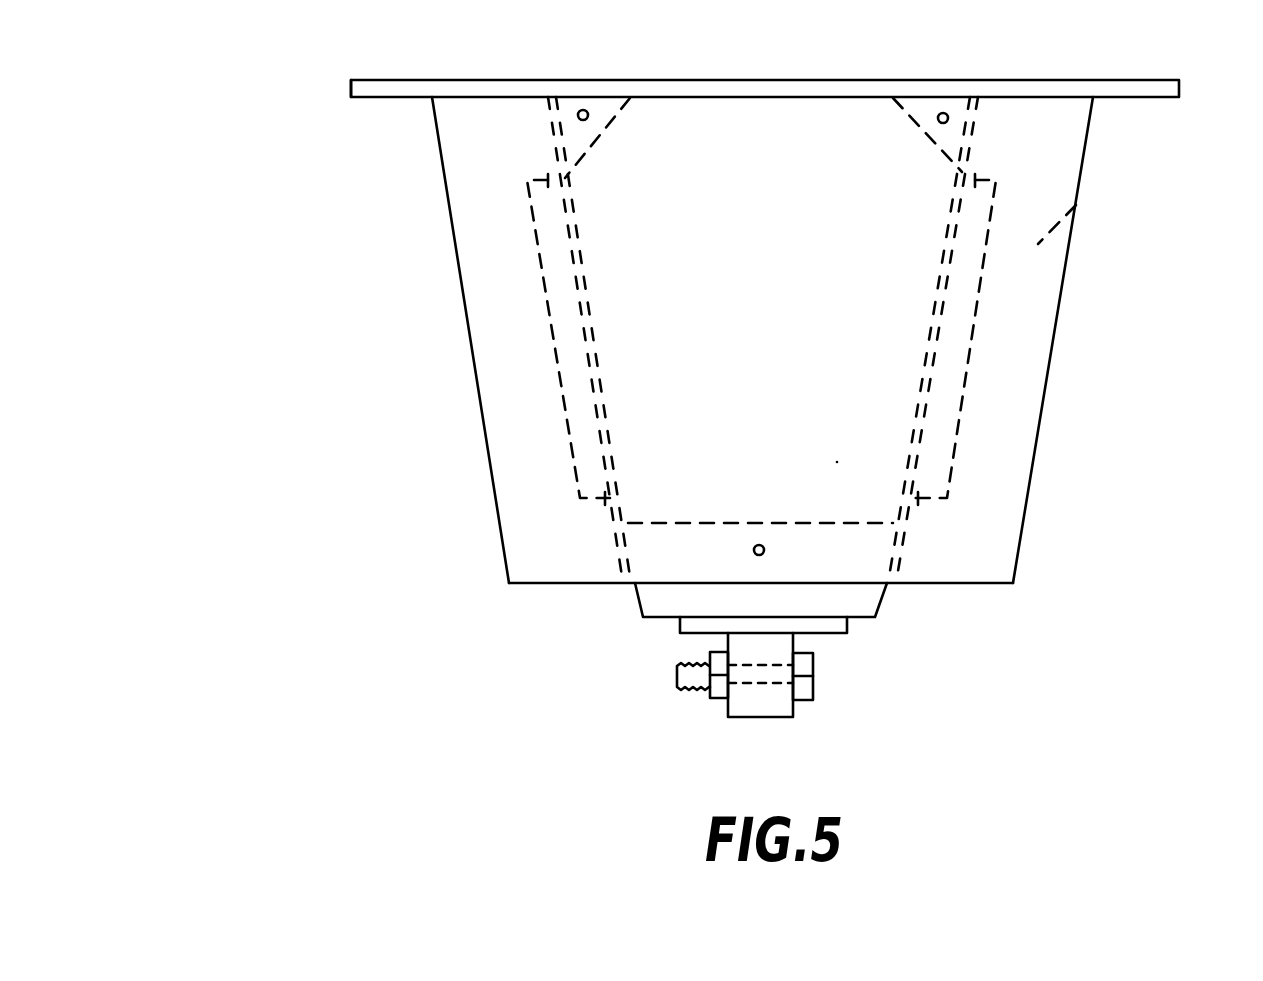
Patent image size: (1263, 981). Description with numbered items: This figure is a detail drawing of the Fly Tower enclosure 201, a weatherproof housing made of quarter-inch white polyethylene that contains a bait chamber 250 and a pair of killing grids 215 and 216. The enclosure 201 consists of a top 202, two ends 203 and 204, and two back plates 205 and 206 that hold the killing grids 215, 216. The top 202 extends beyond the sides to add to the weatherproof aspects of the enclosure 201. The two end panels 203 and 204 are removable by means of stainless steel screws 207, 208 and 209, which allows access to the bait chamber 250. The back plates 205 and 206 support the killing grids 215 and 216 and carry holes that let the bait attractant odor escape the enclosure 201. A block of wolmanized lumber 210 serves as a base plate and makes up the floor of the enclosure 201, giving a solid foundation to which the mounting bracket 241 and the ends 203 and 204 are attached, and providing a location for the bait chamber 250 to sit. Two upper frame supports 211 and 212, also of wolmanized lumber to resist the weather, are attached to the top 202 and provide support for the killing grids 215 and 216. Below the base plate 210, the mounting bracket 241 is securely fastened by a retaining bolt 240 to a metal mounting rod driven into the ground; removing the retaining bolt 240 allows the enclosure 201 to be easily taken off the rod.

The enclosure 201 is at (765, 48).
The top 202 is at (351, 96).
The end 203 is at (485, 204).
The end 204 is at (1076, 205).
The back plate 205 is at (713, 298).
The back plate 206 is at (928, 313).
The stainless steel screw 207 is at (587, 110).
The stainless steel screw 208 is at (948, 112).
The stainless steel screw 209 is at (766, 547).
The block of wolmanized lumber 210 is at (683, 571).
The upper frame support 211 is at (668, 163).
The upper frame support 212 is at (933, 152).
The killing grid 215 is at (557, 378).
The killing grid 216 is at (970, 383).
The retaining bolt 240 is at (677, 680).
The mounting bracket 241 is at (677, 633).
The bait chamber 250 is at (837, 462).